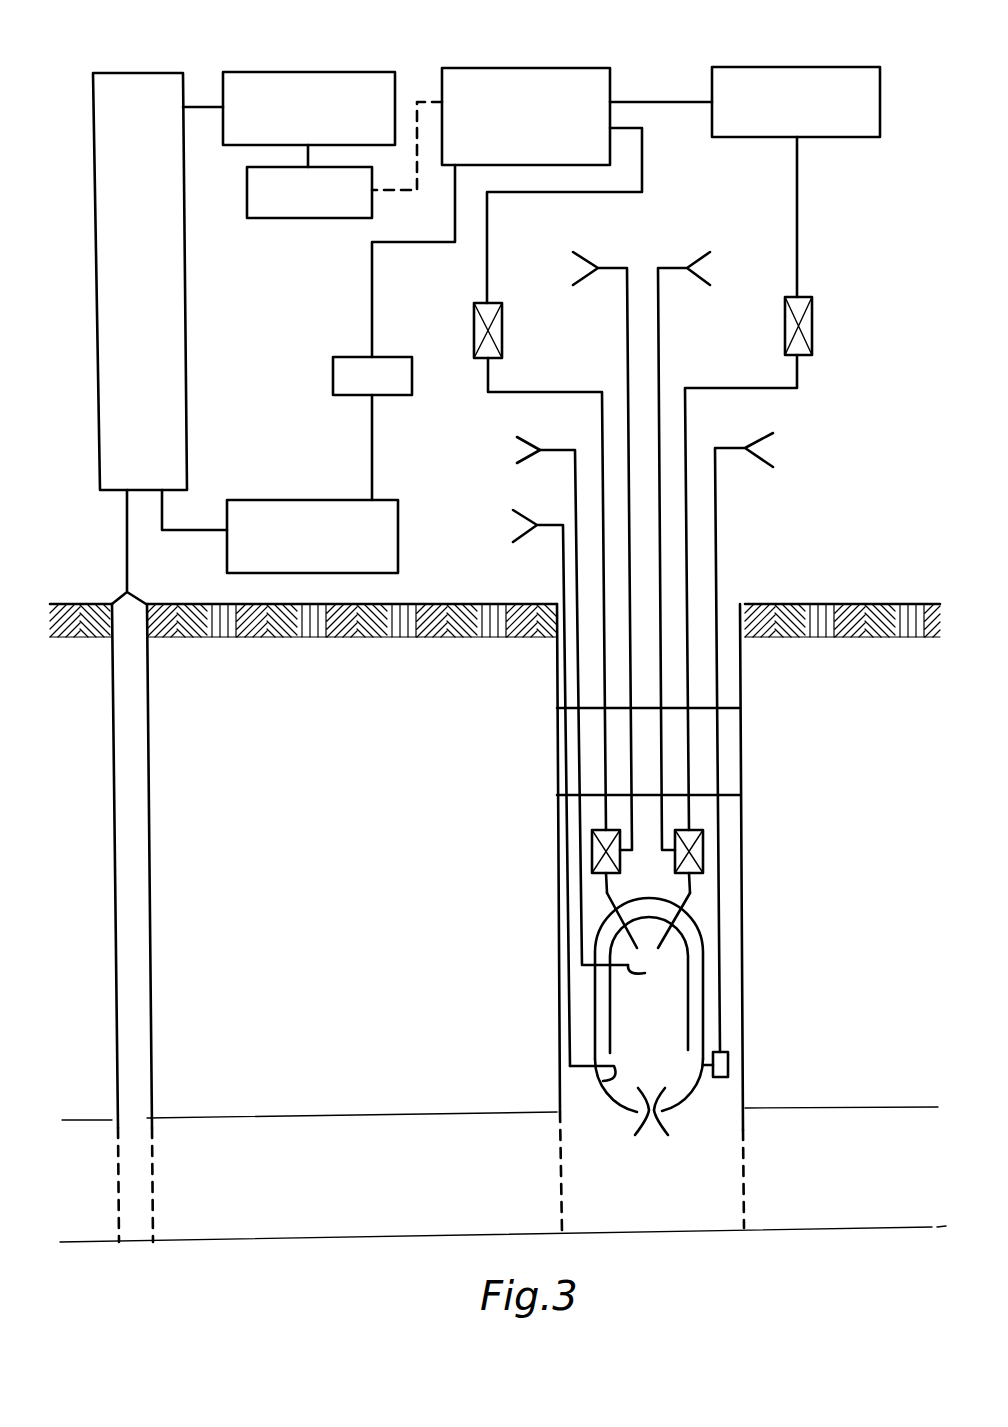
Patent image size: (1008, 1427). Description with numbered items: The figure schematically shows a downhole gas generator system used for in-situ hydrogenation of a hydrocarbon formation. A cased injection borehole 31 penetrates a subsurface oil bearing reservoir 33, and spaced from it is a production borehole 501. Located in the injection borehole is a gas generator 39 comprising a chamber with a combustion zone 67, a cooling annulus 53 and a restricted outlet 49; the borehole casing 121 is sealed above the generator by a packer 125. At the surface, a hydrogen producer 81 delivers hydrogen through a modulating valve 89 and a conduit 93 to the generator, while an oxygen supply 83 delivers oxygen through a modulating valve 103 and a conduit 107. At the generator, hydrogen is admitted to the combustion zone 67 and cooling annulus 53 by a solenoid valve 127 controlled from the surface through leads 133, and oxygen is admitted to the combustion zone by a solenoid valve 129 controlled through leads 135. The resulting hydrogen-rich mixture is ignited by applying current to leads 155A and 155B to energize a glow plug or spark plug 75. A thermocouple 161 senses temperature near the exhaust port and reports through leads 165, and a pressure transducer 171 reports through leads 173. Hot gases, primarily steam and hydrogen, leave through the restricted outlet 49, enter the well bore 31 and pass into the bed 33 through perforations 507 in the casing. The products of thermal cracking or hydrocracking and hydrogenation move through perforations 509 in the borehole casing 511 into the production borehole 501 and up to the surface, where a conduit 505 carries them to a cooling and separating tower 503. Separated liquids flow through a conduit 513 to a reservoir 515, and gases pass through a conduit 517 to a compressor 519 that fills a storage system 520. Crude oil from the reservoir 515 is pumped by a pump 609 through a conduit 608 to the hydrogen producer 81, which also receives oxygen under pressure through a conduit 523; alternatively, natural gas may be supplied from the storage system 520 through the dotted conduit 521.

The cased injection borehole 31 is at (742, 667).
The subsurface oil bearing reservoir 33 is at (347, 1185).
The gas generator 39 is at (685, 1100).
The restricted outlet 49 is at (650, 1122).
The cooling annulus 53 is at (603, 993).
The combustion zone 67 is at (655, 1010).
The glow plug or spark plug 75 is at (636, 972).
The hydrogen producer 81 is at (518, 68).
The oxygen supply 83 is at (790, 67).
The modulating valve 89 is at (474, 322).
The conduit 93 is at (553, 392).
The modulating valve 103 is at (812, 318).
The conduit 107 is at (797, 388).
The borehole casing 121 is at (744, 1192).
The packer 125 is at (673, 750).
The solenoid valve 127 is at (592, 853).
The solenoid valve 129 is at (703, 848).
The leads 133 is at (627, 312).
The leads 135 is at (658, 312).
The lead 155A is at (518, 438).
The lead 155B is at (518, 463).
The thermocouple 161 is at (598, 1078).
The leads 165 is at (565, 672).
The pressure transducer 171 is at (728, 1063).
The leads 173 is at (716, 515).
The production borehole 501 is at (150, 840).
The cooling and separating tower 503 is at (186, 267).
The conduit 505 is at (127, 537).
The perforations 507 is at (560, 1170).
The perforations 509 is at (119, 1182).
The borehole casing 511 is at (153, 1172).
The conduit 513 is at (192, 530).
The reservoir 515 is at (310, 500).
The conduit 517 is at (201, 105).
The compressor 519 is at (348, 41).
The storage system 520 is at (310, 218).
The conduit 521 is at (418, 102).
The conduit 523 is at (650, 100).
The conduit 608 is at (372, 322).
The pump 609 is at (333, 375).